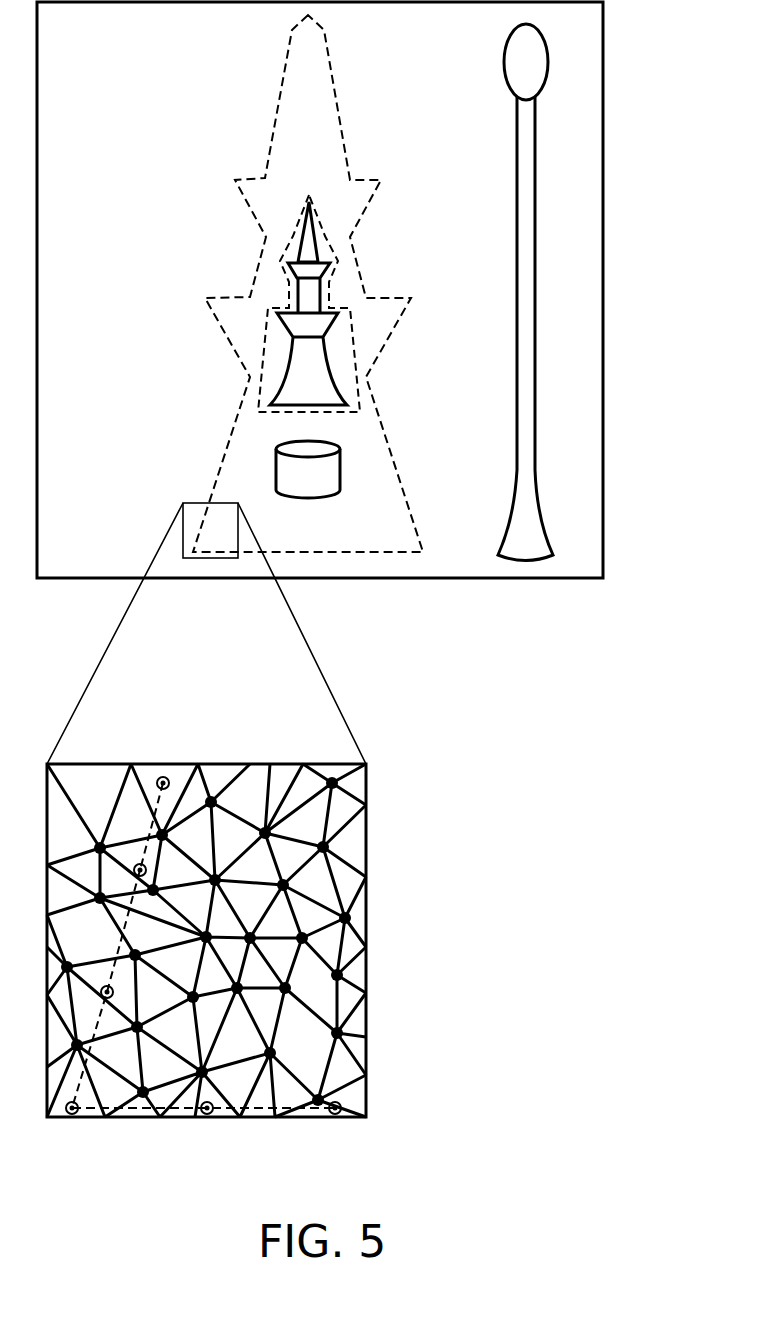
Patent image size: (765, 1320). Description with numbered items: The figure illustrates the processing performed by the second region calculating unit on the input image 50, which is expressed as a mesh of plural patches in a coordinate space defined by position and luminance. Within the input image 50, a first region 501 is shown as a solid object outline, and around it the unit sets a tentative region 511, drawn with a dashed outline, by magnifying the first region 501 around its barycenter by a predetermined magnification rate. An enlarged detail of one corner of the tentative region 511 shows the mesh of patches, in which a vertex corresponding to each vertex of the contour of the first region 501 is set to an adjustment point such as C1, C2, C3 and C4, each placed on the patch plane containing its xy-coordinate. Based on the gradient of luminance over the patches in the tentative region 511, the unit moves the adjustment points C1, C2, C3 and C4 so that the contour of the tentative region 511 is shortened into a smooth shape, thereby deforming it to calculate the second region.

The input image 50 is at (603, 80).
The tentative region 511 is at (247, 180).
The first region 501 is at (308, 196).
The adjustment point C1 is at (162, 776).
The adjustment point C2 is at (140, 863).
The adjustment point C3 is at (107, 985).
The adjustment point C4 is at (73, 1118).